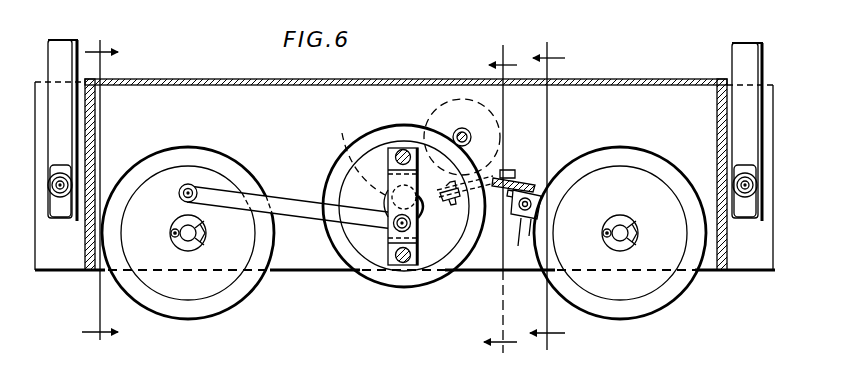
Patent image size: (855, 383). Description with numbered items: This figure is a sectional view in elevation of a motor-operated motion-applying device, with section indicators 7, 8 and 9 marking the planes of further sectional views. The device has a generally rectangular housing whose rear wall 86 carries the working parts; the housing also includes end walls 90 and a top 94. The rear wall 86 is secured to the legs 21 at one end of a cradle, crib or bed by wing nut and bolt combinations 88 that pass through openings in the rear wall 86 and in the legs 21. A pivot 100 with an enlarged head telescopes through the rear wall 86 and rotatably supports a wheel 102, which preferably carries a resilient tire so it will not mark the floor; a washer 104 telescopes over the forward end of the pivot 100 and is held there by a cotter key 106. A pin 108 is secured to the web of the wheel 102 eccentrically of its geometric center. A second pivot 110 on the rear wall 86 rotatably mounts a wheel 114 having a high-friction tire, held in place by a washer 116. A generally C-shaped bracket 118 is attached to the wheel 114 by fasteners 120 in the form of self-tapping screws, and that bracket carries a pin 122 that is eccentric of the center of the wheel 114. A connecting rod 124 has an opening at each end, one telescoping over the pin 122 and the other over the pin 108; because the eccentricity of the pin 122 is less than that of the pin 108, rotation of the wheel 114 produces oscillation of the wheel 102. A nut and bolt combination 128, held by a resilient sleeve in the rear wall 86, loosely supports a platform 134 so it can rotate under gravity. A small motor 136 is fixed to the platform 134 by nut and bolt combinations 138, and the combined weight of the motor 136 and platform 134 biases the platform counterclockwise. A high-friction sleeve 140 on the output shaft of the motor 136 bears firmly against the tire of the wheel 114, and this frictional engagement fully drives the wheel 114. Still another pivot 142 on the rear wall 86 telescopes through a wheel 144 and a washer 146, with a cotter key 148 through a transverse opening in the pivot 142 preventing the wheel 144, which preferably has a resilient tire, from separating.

The section line 7- 7 is at (100, 198).
The section line 8- 8 is at (500, 204).
The section line 9- 9 is at (547, 202).
The legs 21 is at (60, 42).
The rear wall 86 is at (58, 262).
The wing nut and bolt combination 88 is at (72, 180).
The end walls 90 is at (90, 271).
The top 94 is at (645, 80).
The pivot 100 is at (188, 252).
The wheel 102 is at (206, 313).
The washer 104 is at (178, 241).
The cotter key 106 is at (205, 241).
The pin 108 is at (193, 188).
The second pivot 110 is at (342, 156).
The wheel 114 is at (370, 278).
The washer 116 is at (388, 197).
The bracket 118 is at (412, 258).
The fasteners 120 is at (403, 150).
The pin 122 is at (412, 223).
The connecting rod 124 is at (312, 250).
The nut and bolt combination 128 is at (528, 219).
The platform 134 is at (528, 172).
The motor 136 is at (438, 98).
The nut and bolt combinations 138 is at (508, 172).
The sleeve 140 is at (470, 133).
The pivot 142 is at (626, 222).
The wheel 144 is at (650, 290).
The washer 146 is at (636, 243).
The cotter key 148 is at (610, 226).